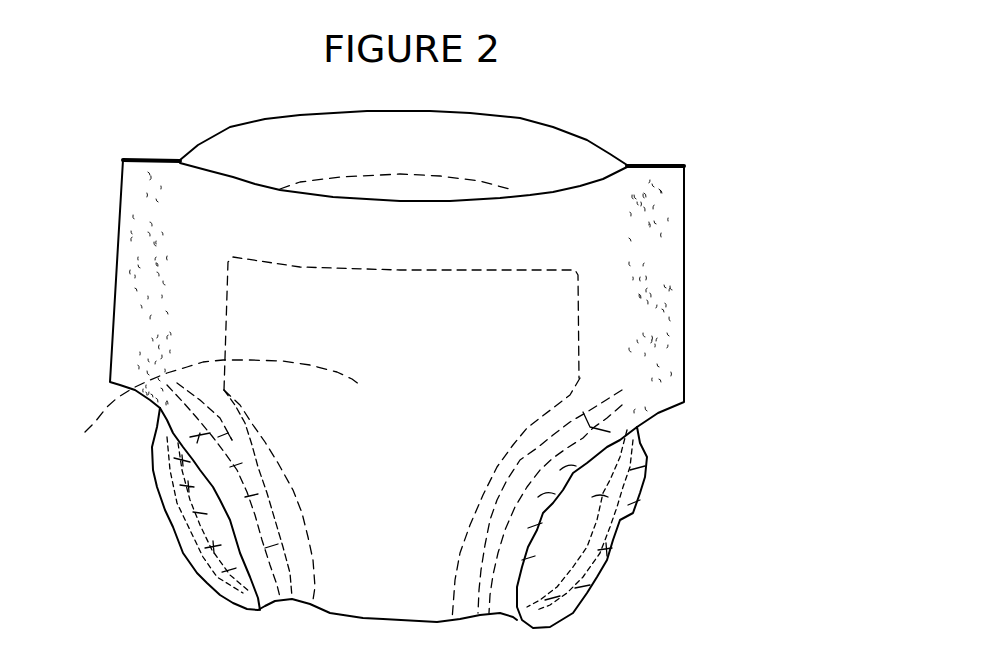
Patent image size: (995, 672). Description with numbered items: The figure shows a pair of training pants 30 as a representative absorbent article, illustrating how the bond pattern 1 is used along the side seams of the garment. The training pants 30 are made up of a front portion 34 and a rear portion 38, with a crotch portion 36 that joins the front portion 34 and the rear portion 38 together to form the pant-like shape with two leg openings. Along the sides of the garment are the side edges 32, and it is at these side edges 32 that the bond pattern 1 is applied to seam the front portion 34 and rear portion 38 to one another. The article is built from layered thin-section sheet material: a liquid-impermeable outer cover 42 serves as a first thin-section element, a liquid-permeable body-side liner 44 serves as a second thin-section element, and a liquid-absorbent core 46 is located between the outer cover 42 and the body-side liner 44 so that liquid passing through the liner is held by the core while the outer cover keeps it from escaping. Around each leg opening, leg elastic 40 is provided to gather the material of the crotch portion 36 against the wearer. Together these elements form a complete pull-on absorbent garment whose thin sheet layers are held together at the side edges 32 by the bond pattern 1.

The bond pattern 1 is at (670, 318).
The training pants 30 is at (607, 115).
The side edges 32 is at (122, 293).
The front portion 34 is at (547, 240).
The crotch portion 36 is at (390, 593).
The rear portion 38 is at (290, 147).
The leg elastic 40 is at (615, 480).
The liquid-impermeable outer cover 42 is at (207, 223).
The liquid-permeable body-side liner 44 is at (470, 153).
The liquid-absorbent core 46 is at (210, 480).